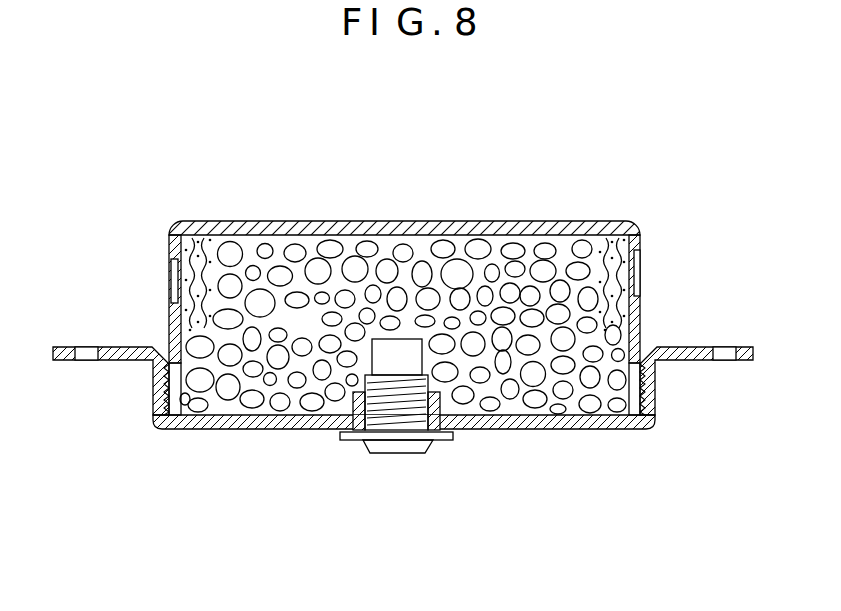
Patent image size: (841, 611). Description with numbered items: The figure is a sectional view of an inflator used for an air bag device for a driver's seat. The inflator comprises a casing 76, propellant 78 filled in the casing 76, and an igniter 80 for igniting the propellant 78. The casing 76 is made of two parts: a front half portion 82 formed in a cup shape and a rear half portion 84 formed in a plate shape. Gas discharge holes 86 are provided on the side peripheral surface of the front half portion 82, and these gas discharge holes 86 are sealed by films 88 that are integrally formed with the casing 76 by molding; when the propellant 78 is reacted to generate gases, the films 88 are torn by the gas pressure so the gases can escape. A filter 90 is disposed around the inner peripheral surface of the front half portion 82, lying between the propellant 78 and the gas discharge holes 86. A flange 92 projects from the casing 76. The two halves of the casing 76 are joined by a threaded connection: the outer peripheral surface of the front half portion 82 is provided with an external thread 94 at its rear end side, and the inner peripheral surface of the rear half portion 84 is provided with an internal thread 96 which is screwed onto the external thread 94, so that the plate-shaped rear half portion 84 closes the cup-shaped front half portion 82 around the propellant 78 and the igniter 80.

The casing 76 is at (527, 212).
The propellant 78 is at (280, 364).
The igniter 80 is at (395, 453).
The front half portion 82 is at (408, 228).
The rear half portion 84 is at (557, 430).
The gas discharge holes 86 is at (169, 288).
The films 88 is at (169, 266).
The filter 90 is at (194, 242).
The flange 92 is at (117, 346).
The external thread 94 is at (183, 392).
The internal thread 96 is at (614, 405).